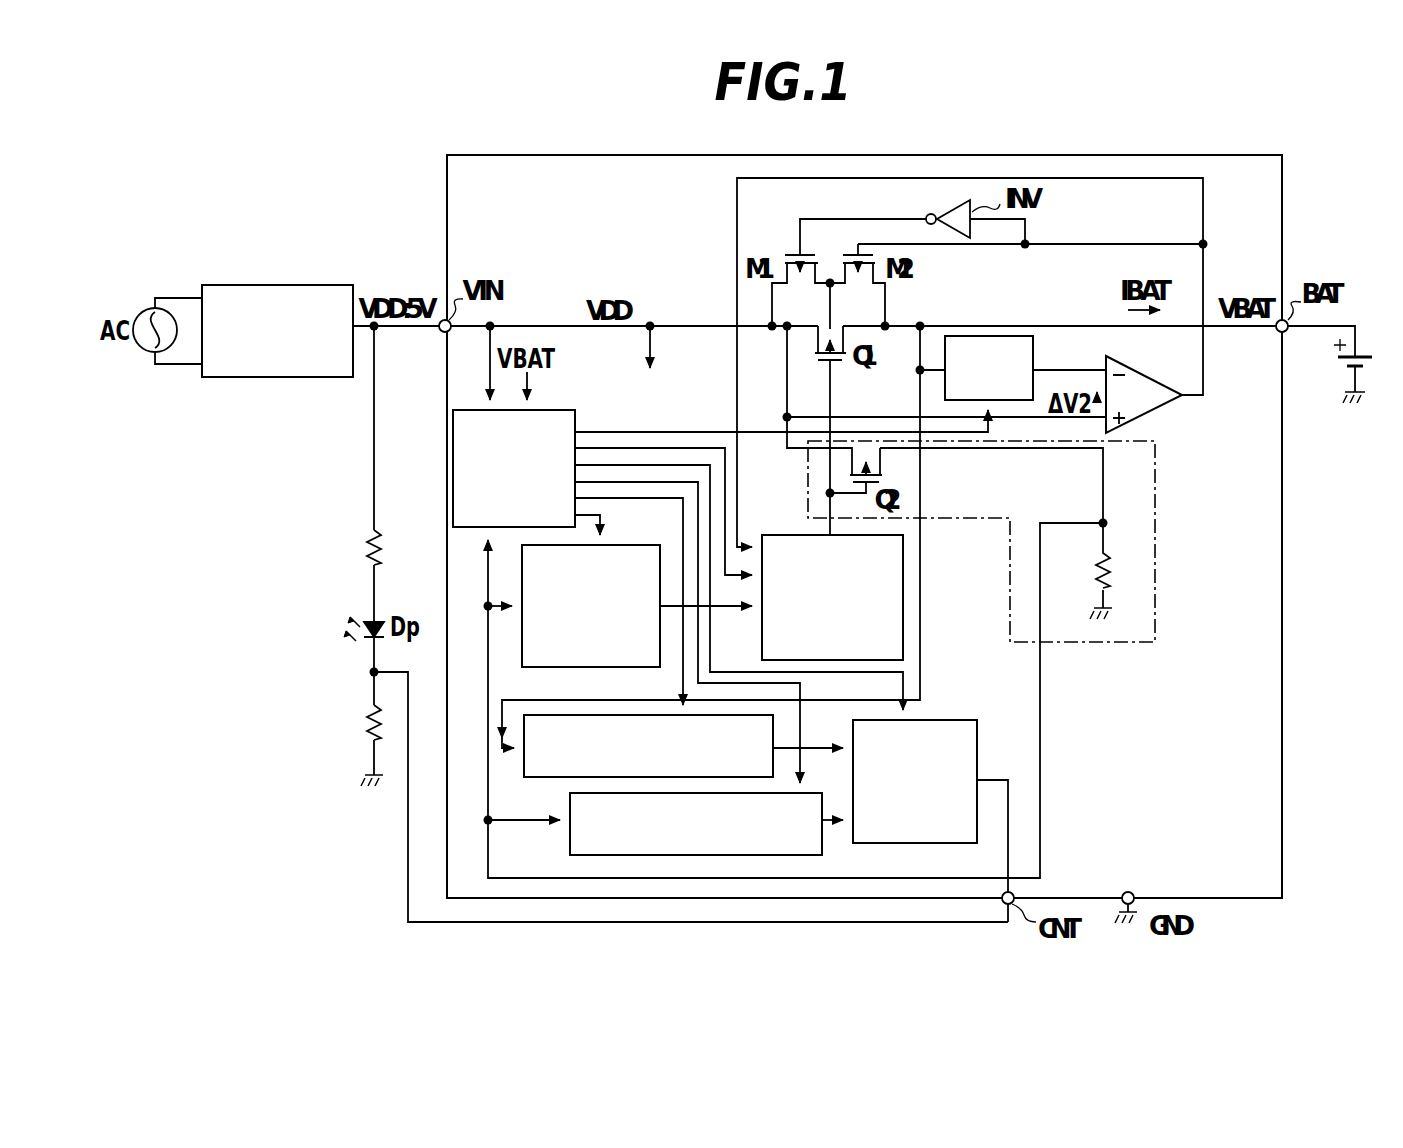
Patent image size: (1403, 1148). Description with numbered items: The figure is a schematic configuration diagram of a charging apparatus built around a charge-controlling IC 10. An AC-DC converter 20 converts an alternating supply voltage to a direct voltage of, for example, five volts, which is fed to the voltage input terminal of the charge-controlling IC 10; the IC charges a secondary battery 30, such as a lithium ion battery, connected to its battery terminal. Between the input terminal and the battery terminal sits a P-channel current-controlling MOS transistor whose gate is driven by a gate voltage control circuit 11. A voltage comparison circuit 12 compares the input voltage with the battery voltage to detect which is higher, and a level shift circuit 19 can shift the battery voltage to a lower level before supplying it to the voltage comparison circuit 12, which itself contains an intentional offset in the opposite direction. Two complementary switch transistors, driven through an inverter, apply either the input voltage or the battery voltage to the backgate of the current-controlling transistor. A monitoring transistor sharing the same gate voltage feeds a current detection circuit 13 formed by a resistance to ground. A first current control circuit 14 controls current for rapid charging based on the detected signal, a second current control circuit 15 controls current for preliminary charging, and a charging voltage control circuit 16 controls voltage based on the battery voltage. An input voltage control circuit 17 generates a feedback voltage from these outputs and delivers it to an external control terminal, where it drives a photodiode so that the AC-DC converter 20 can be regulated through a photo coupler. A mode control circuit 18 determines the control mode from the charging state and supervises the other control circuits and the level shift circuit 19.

The charge-controlling IC 10 is at (1282, 802).
The gate voltage control circuit 11 is at (770, 535).
The voltage comparison circuit 12 is at (1162, 404).
The current detection circuit 13 is at (1155, 546).
The first current control circuit 14 is at (572, 855).
The second current control circuit 15 is at (620, 545).
The charging voltage control circuit 16 is at (548, 777).
The input voltage control circuit 17 is at (977, 722).
The mode control circuit 18 is at (575, 410).
The level shift circuit 19 is at (1033, 352).
The AC-DC converter 20 is at (296, 285).
The secondary battery 30 is at (1360, 352).